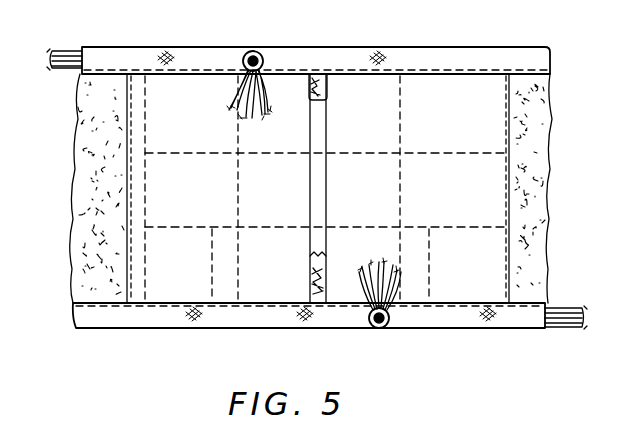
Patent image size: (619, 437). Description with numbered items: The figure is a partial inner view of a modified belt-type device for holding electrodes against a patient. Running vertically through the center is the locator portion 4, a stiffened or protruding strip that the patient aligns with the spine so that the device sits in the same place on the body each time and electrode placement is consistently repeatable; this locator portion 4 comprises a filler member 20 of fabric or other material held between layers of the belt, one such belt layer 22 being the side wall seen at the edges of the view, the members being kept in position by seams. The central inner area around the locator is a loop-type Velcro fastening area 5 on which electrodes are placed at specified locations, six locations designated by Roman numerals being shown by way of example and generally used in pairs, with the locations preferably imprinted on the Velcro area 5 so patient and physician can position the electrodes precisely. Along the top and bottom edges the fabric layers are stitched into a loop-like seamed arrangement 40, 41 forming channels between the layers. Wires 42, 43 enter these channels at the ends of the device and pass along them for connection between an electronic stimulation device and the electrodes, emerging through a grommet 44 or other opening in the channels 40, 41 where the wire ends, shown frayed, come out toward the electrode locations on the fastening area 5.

The locator portion 4 is at (322, 76).
The loop-type Velcro fastening area 5 is at (450, 79).
The filler member 20 is at (314, 186).
The belt layer 22 is at (97, 285).
The loop-like seamed arrangement 40 is at (113, 46).
The loop-like seamed arrangement 41 is at (510, 330).
The wire 42 is at (72, 18).
The wire 43 is at (561, 330).
The grommet 44 is at (242, 48).